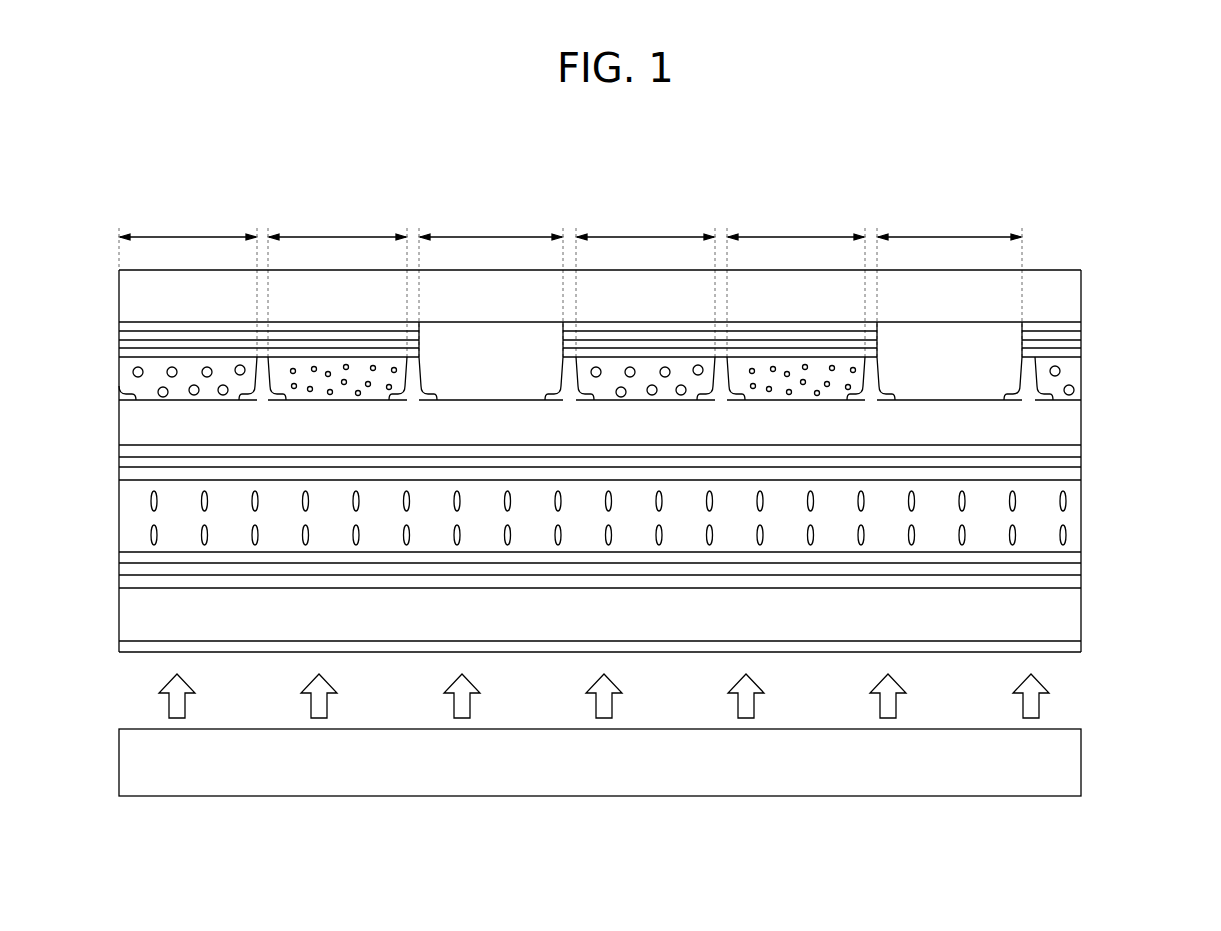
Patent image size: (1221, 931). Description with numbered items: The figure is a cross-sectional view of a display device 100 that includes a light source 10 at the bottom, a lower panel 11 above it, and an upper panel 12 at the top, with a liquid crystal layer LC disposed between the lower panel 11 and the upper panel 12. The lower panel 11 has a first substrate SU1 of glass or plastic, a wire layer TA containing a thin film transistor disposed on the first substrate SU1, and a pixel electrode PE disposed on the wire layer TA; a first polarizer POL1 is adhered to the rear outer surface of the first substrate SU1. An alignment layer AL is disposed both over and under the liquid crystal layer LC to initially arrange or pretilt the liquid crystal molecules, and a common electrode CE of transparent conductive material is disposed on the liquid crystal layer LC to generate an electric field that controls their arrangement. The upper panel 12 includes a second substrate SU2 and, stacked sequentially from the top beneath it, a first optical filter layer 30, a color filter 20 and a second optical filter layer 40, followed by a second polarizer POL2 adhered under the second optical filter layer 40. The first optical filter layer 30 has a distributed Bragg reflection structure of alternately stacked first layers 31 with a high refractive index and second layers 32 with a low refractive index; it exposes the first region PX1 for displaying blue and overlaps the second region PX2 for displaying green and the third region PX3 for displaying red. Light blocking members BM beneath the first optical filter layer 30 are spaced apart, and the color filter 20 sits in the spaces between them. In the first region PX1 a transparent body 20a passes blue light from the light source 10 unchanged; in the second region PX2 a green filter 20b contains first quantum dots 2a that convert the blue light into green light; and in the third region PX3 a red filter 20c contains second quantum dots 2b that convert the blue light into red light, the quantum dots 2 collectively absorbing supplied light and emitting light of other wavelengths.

The display device 100 is at (131, 178).
The light source 10 is at (1081, 762).
The lower panel 11 is at (1165, 557).
The upper panel 12 is at (1165, 265).
The color filter 20 is at (922, 163).
The transparent body 20a is at (917, 368).
The green filter 20b is at (819, 367).
The red filter 20c is at (680, 367).
The quantum dot 2 is at (66, 360).
The first quantum dot 2a is at (308, 392).
The second quantum dot 2b is at (133, 372).
The first optical filter layer 30 is at (1133, 297).
The first layer 31 is at (1081, 336).
The second layer 32 is at (1081, 327).
The second optical filter layer 40 is at (1081, 425).
The second substrate SU2 is at (1081, 280).
The light blocking member BM is at (1030, 381).
The second polarizer POL2 is at (1081, 449).
The common electrode CE is at (1081, 462).
The alignment layer AL is at (125, 476).
The liquid crystal layer LC is at (1081, 518).
The pixel electrode PE is at (1072, 569).
The wire layer TA is at (1072, 581).
The first substrate SU1 is at (1081, 620).
The first polarizer POL1 is at (1081, 648).
The first region PX1 is at (720, 224).
The second region PX2 is at (566, 224).
The third region PX3 is at (417, 224).